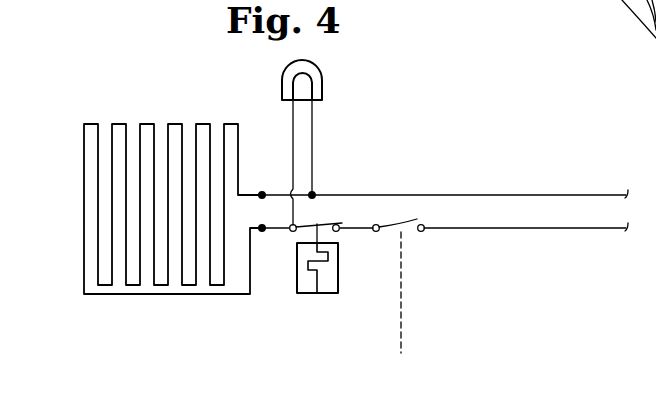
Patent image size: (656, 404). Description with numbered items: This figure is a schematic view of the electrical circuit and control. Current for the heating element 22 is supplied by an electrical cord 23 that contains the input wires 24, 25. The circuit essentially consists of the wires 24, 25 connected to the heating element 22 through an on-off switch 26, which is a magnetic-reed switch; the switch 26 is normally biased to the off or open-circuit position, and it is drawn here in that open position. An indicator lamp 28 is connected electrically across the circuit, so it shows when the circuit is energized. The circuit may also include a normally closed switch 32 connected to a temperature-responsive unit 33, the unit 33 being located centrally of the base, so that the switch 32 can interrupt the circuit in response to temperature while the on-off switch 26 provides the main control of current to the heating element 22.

The heating element 22 is at (97, 114).
The electrical cord 23 is at (596, 188).
The input wire 24 is at (518, 195).
The input wire 25 is at (518, 229).
The on-off switch 26 is at (403, 229).
The indicator lamp 28 is at (320, 68).
The normally closed switch 32 is at (330, 224).
The temperature-responsive unit 33 is at (311, 293).